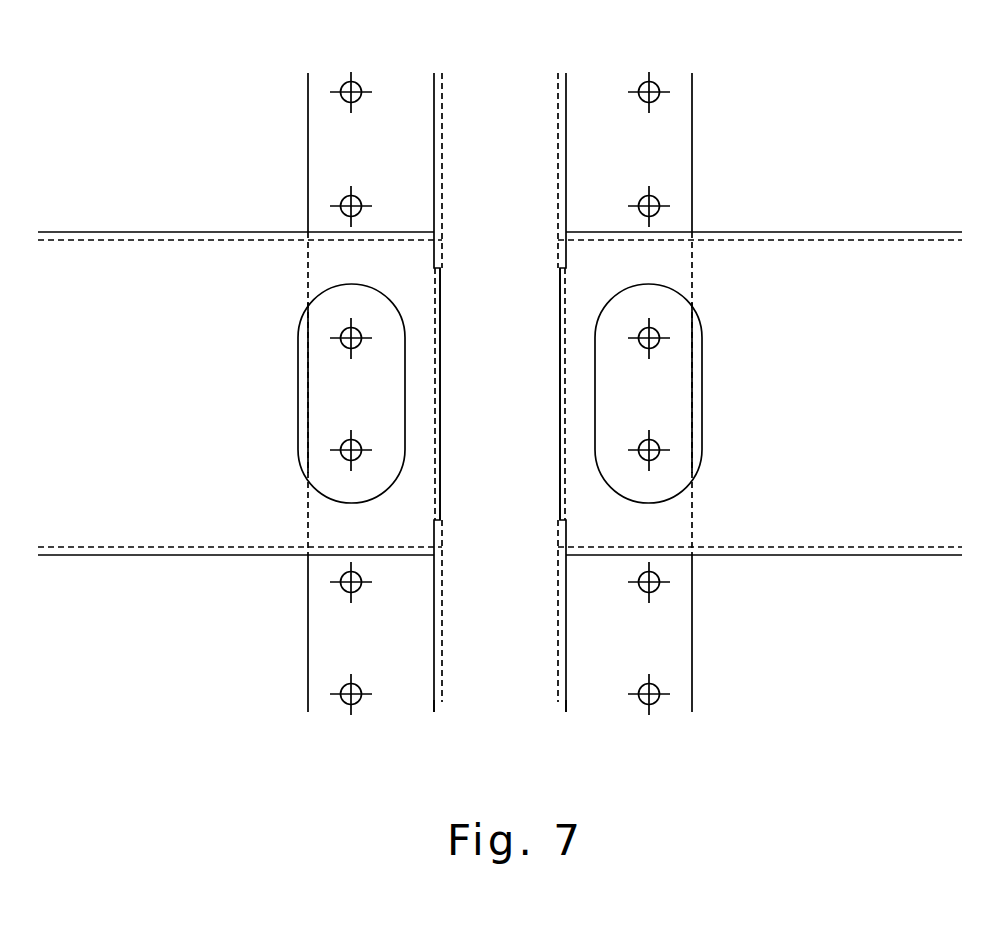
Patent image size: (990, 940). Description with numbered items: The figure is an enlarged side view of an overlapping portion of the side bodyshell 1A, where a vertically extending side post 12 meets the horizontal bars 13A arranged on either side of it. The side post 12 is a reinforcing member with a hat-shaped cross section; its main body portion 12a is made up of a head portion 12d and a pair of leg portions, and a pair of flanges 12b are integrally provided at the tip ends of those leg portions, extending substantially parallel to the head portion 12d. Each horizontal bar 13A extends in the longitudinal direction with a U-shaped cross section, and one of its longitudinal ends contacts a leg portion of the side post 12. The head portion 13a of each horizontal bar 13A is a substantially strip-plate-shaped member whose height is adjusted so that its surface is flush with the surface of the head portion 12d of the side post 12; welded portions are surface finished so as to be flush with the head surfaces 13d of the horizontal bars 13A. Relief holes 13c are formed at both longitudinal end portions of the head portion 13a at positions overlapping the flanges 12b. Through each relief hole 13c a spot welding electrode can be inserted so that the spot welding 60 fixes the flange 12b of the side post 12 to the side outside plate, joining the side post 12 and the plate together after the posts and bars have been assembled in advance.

The side bodyshell 1A is at (886, 100).
The side post 12 is at (510, 94).
The main body portion 12a is at (499, 688).
The flange 12b is at (377, 404).
The head portion 12d is at (513, 404).
The horizontal bar 13A is at (193, 251).
The head portion 13a is at (201, 540).
The relief hole 13c is at (318, 408).
The head surface 13d is at (153, 404).
The spot welding 60 is at (347, 95).